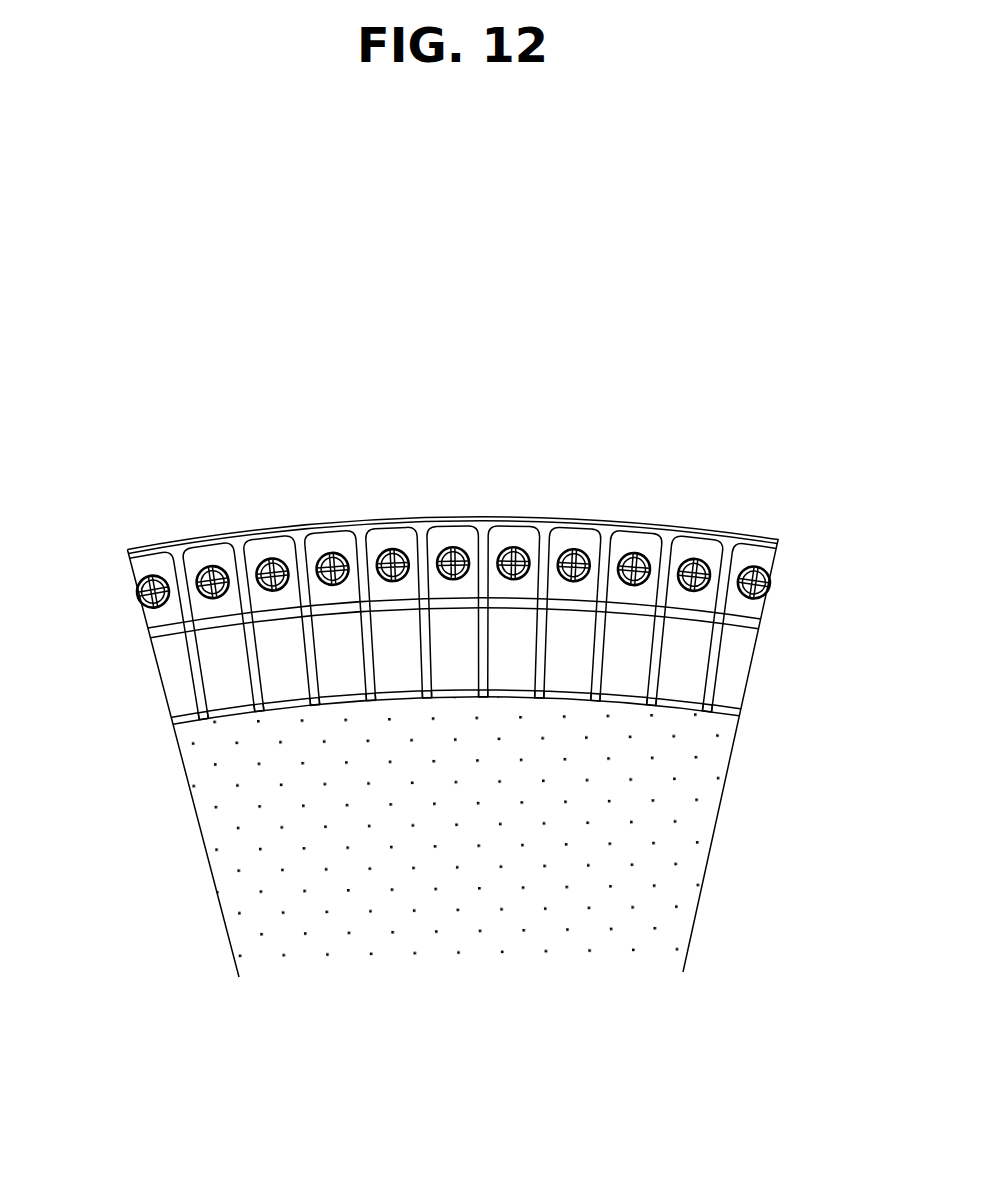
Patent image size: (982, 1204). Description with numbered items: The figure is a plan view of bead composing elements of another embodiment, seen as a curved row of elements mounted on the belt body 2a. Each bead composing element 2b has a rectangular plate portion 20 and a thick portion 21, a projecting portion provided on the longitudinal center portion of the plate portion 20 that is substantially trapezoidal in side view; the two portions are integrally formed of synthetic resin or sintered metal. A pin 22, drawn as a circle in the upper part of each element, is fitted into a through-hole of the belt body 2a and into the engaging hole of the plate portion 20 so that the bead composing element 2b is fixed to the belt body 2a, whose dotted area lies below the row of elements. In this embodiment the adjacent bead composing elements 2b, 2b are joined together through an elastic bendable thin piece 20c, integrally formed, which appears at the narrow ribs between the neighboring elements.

The belt body 2a is at (678, 841).
The bead composing element 2b is at (205, 550).
The plate portion 20 is at (173, 688).
The elastic bendable thin piece 20c is at (262, 713).
The thick portion 21 is at (145, 638).
The pin 22 is at (140, 582).